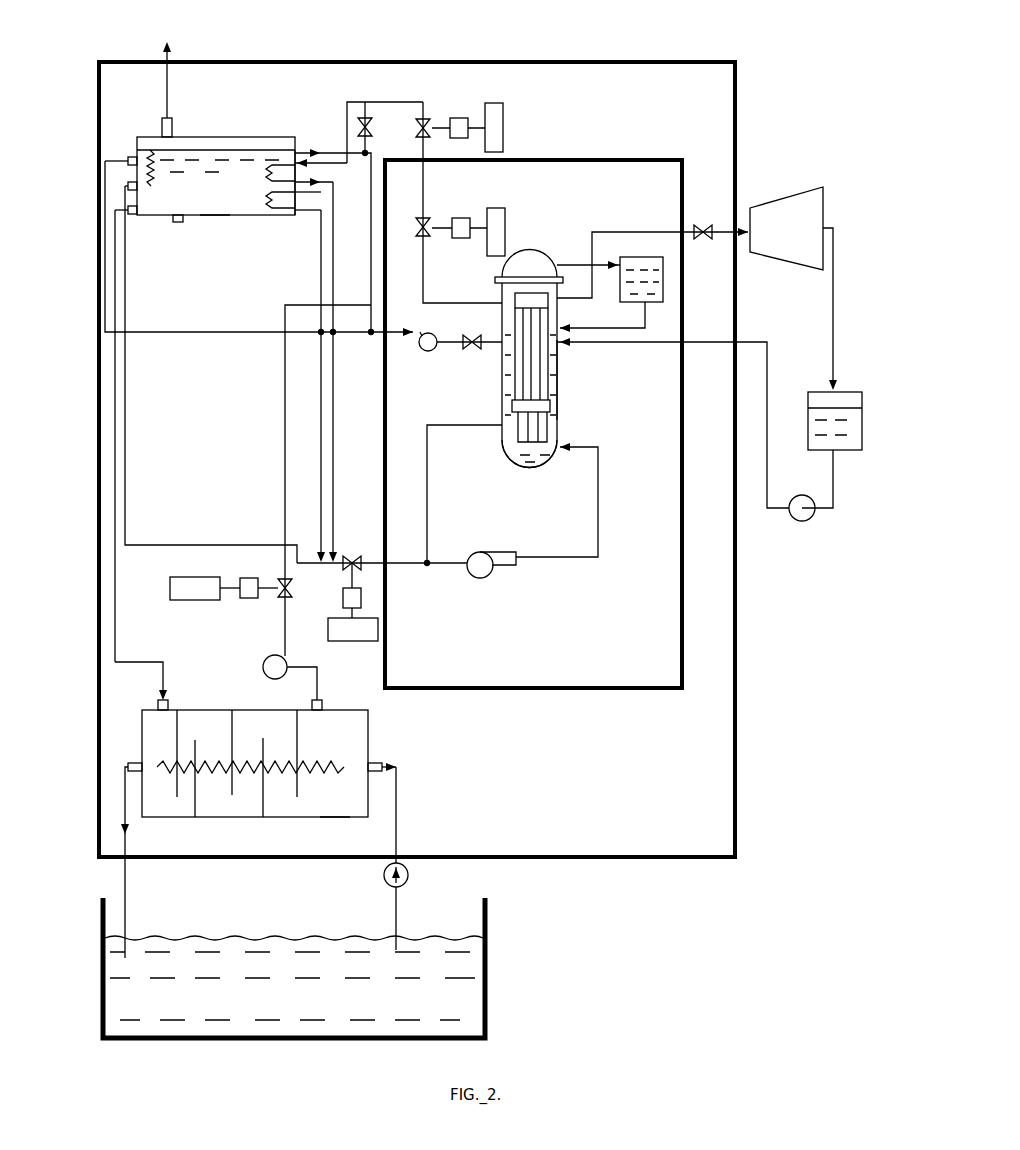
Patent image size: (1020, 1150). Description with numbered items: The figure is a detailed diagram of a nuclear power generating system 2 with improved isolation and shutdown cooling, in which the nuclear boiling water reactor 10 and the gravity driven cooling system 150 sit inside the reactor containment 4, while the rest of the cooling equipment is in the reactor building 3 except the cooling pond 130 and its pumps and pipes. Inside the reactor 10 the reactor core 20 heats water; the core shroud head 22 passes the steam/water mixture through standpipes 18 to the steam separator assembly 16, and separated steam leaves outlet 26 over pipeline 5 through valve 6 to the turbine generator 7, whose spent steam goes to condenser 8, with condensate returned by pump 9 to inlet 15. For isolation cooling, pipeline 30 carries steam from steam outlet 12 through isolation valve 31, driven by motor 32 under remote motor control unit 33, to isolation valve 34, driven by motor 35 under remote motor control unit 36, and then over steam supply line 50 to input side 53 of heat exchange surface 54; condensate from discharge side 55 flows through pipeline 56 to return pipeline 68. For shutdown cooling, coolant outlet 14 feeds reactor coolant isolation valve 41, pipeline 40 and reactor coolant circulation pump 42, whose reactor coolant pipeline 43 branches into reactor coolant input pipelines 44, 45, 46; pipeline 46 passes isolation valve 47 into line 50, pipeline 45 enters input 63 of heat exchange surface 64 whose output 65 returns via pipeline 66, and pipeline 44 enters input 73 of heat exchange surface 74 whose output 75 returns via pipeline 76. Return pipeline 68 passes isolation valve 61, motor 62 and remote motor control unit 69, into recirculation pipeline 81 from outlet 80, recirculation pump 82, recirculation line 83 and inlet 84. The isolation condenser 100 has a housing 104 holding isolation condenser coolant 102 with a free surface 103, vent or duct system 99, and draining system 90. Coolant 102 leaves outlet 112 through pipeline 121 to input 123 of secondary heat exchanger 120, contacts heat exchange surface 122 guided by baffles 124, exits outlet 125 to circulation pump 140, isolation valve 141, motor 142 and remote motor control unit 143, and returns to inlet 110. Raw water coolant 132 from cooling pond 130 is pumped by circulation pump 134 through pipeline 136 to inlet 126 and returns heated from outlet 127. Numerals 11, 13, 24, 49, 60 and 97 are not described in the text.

The nuclear power generating system 2 is at (667, 905).
The reactor building 3 is at (738, 822).
The reactor containment 4 is at (686, 660).
The pipeline 5 is at (640, 232).
The valve 6 is at (707, 225).
The turbine generator 7 is at (790, 190).
The condenser 8 is at (840, 392).
The pump 9 is at (812, 520).
The nuclear boiling water reactor 10 is at (546, 232).
The dome 11 is at (542, 250).
The nuclear reactor steam outlet 12 is at (500, 310).
The feedwater line 13 is at (648, 343).
The coolant outlet 14 is at (500, 342).
The inlet 15 is at (567, 344).
The steam separator assembly 16 is at (515, 291).
The standpipes 18 is at (515, 380).
The reactor core 20 is at (549, 425).
The core shroud head 22 is at (551, 405).
The annulus 24 is at (556, 380).
The outlet 26 is at (561, 283).
The pipeline 30 is at (424, 265).
The isolation valve 31 is at (418, 222).
The motor 32 is at (461, 218).
The remote motor control unit 33 is at (507, 210).
The isolation valve 34 is at (428, 119).
The motor 35 is at (458, 118).
The remote motor control unit 36 is at (503, 108).
The pipeline 40 is at (433, 351).
The reactor coolant isolation valve 41 is at (474, 348).
The reactor coolant circulation pump 42 is at (430, 333).
The reactor coolant pipeline 43 is at (396, 332).
The reactor coolant input pipeline 44 is at (336, 321).
The reactor coolant input pipeline 45 is at (140, 332).
The reactor coolant input pipeline 46 is at (371, 243).
The isolation valve 47 is at (372, 127).
The junction 49 is at (378, 340).
The steam supply line 50 is at (397, 102).
The input side 53 is at (306, 160).
The heat exchange surface 54 is at (268, 172).
The discharge side 55 is at (322, 180).
The pipeline 56 is at (337, 500).
The line 60 is at (378, 565).
The isolation valve 61 is at (356, 557).
The motor 62 is at (343, 599).
The input 63 is at (128, 158).
The heat exchange surface 64 is at (150, 150).
The output 65 is at (135, 188).
The pipeline 66 is at (118, 490).
The return pipeline 68 is at (148, 545).
The remote motor control unit 69 is at (328, 630).
The input 73 is at (297, 214).
The heat exchange surface 74 is at (268, 198).
The output 75 is at (291, 214).
The pipeline 76 is at (320, 528).
The outlet 80 is at (502, 432).
The recirculation pipeline 81 is at (440, 425).
The recirculation pump 82 is at (492, 551).
The recirculation line 83 is at (598, 525).
The inlet 84 is at (570, 447).
The draining system 90 is at (178, 222).
The line 97 is at (283, 529).
The vent or duct system 99 is at (172, 127).
The isolation condenser 100 is at (240, 137).
The isolation condenser coolant 102 is at (226, 216).
The free surface 103 is at (205, 150).
The housing 104 is at (263, 137).
The inlet 110 is at (297, 150).
The outlet 112 is at (130, 214).
The secondary heat exchanger 120 is at (370, 722).
The pipeline 121 is at (165, 668).
The heat exchange surface 122 is at (352, 760).
The input 123 is at (170, 706).
The baffles 124 is at (255, 817).
The outlet 125 is at (324, 706).
The inlet 126 is at (388, 763).
The outlet 127 is at (134, 763).
The cooling pond 130 is at (127, 910).
The raw water coolant 132 is at (475, 988).
The circulation pump 134 is at (408, 878).
The pipeline 136 is at (398, 820).
The circulation pump 140 is at (287, 663).
The isolation valve 141 is at (281, 599).
The motor 142 is at (252, 578).
The remote motor control unit 143 is at (202, 577).
The gravity driven cooling system 150 is at (648, 305).